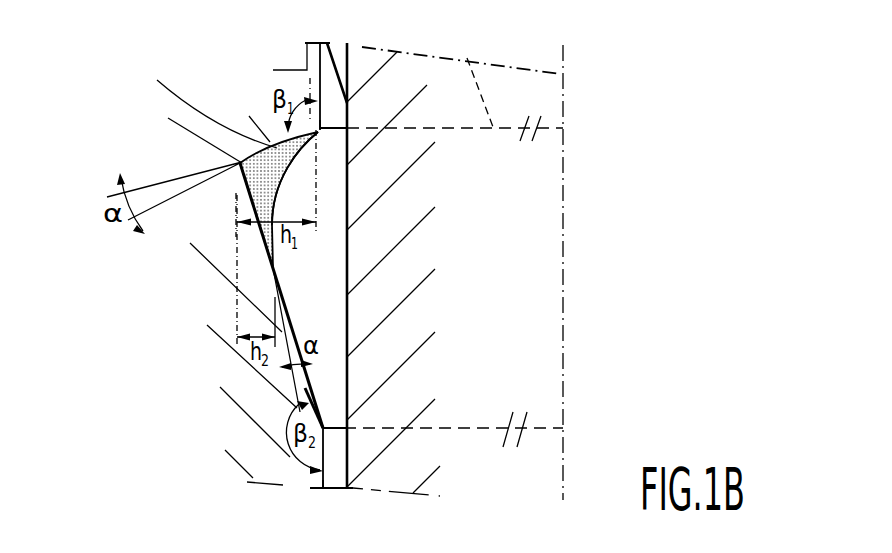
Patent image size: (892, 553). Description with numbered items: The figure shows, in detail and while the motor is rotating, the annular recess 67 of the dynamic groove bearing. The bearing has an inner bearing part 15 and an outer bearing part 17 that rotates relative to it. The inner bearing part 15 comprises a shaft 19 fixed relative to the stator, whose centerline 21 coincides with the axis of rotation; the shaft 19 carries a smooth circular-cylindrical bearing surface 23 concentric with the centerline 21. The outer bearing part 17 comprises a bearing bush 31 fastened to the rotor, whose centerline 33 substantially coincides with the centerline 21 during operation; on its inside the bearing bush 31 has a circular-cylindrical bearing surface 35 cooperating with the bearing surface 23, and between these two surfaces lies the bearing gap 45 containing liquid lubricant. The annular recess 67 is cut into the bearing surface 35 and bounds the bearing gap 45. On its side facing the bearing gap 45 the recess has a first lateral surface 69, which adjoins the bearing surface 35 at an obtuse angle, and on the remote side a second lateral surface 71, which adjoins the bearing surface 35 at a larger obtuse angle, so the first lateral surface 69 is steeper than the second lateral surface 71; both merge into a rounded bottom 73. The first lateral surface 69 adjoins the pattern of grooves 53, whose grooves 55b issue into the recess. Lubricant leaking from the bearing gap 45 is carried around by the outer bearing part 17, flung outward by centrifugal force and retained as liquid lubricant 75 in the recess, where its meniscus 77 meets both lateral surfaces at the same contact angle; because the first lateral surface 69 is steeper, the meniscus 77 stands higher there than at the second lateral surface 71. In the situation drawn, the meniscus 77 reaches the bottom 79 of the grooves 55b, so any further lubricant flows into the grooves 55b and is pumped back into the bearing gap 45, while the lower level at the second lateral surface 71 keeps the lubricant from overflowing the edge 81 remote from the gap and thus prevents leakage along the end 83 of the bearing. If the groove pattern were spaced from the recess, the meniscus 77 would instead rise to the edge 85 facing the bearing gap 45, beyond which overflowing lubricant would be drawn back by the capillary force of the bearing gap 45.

The inner bearing part 15 is at (445, 259).
The shaft 19 is at (495, 82).
The centerline 21 is at (604, 272).
The centerline 33 is at (563, 186).
The bearing surface 23 is at (358, 186).
The bearing gap 45 is at (329, 70).
The pattern of grooves 53 is at (378, 55).
The grooves 55b is at (341, 43).
The outer bearing part 17 is at (246, 244).
The bearing bush 31 is at (305, 92).
The bearing surface 35 is at (307, 43).
The annular recess 67 is at (170, 255).
The first lateral surface 69 is at (205, 103).
The second lateral surface 71 is at (305, 388).
The rounded bottom 73 is at (195, 135).
The liquid lubricant 75 is at (268, 180).
The meniscus 77 is at (277, 208).
The bottom of the grooves 79 is at (280, 70).
The edge 81 is at (325, 413).
The end 83 is at (325, 490).
The edge 85 is at (319, 133).